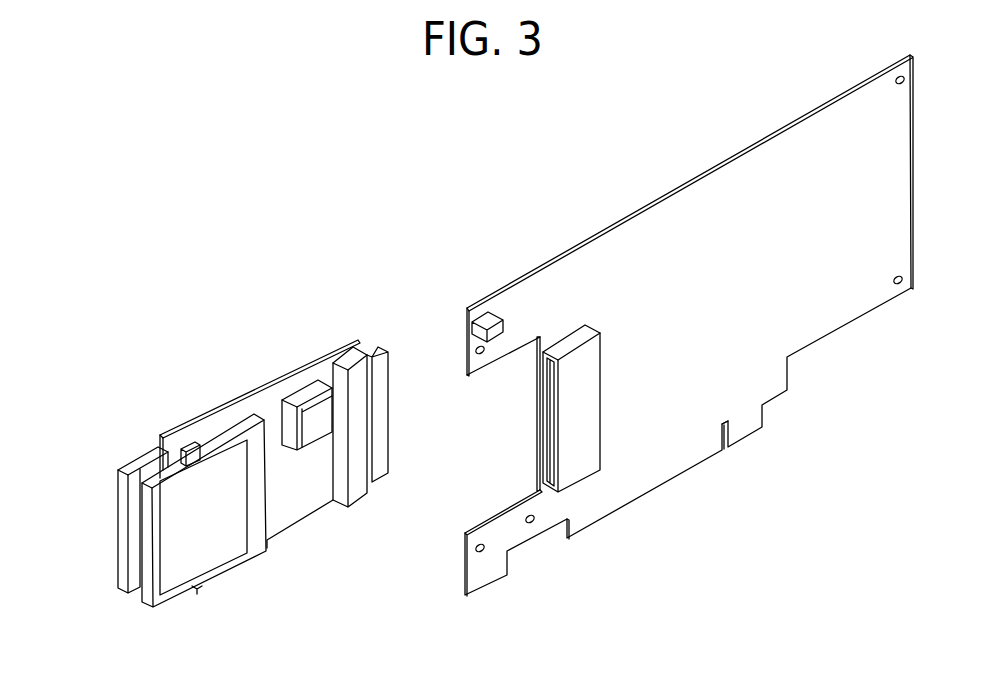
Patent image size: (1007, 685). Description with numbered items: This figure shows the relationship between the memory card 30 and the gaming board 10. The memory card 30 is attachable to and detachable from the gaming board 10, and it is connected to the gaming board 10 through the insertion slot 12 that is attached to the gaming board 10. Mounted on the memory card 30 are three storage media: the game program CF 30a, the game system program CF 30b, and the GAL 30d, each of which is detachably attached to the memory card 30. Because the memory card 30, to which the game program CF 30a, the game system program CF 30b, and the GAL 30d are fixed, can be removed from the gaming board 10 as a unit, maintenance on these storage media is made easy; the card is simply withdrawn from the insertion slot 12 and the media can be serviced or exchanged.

The gaming board 10 is at (702, 487).
The insertion slot 12 is at (583, 360).
The memory card 30 is at (313, 539).
The game program CF 30a is at (128, 592).
The game system program CF 30b is at (153, 606).
The GAL 30d is at (312, 415).